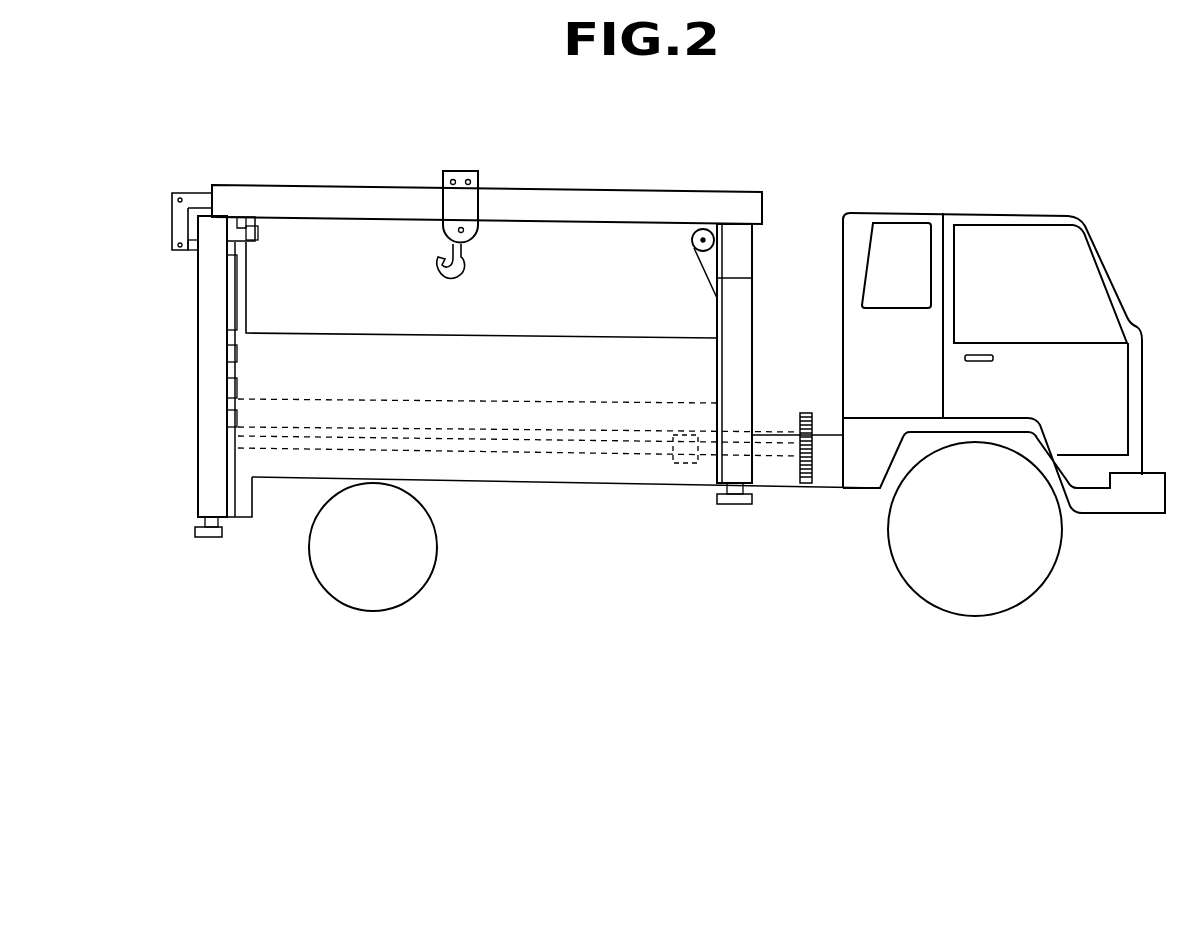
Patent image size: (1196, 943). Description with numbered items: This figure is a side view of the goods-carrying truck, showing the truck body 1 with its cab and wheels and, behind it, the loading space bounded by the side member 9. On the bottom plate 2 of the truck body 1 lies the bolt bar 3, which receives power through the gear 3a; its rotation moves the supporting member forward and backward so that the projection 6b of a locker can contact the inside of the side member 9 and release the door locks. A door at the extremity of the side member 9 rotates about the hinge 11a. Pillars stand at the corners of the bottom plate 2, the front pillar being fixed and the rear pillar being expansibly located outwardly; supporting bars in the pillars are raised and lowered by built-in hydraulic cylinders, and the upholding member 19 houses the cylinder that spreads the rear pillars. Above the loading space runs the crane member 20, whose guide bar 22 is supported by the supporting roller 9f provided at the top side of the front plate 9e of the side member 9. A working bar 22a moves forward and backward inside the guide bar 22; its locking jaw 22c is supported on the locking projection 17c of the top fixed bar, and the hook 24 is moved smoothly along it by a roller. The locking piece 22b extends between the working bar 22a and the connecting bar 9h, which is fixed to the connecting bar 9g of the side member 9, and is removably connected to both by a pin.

The truck body 1 is at (1015, 213).
The bottom plate 2 is at (827, 480).
The bolt bar 3 is at (615, 450).
The gear 3a is at (805, 487).
The projection 6b is at (228, 407).
The side member 9 is at (518, 472).
The front plate 9e is at (752, 278).
The supporting roller 9f is at (705, 227).
The connecting bar 9g is at (228, 310).
The connecting bar 9h is at (193, 252).
The hinge 11a is at (230, 355).
The locking projection 17c is at (235, 220).
The upholding member 19 is at (198, 540).
The crane member 20 is at (487, 195).
The guide bar 22 is at (577, 197).
The working bar 22a is at (195, 193).
The locking piece 22b is at (177, 227).
The locking jaw 22c is at (253, 230).
The hook 24 is at (450, 207).